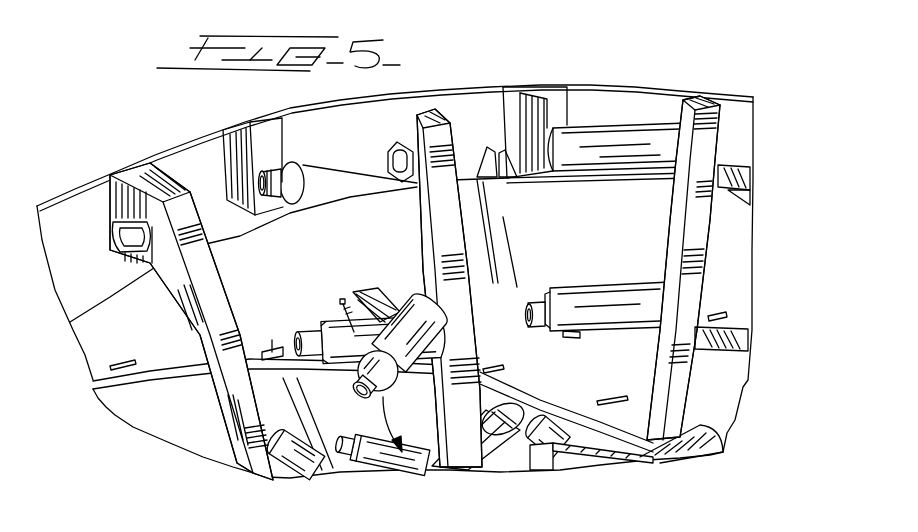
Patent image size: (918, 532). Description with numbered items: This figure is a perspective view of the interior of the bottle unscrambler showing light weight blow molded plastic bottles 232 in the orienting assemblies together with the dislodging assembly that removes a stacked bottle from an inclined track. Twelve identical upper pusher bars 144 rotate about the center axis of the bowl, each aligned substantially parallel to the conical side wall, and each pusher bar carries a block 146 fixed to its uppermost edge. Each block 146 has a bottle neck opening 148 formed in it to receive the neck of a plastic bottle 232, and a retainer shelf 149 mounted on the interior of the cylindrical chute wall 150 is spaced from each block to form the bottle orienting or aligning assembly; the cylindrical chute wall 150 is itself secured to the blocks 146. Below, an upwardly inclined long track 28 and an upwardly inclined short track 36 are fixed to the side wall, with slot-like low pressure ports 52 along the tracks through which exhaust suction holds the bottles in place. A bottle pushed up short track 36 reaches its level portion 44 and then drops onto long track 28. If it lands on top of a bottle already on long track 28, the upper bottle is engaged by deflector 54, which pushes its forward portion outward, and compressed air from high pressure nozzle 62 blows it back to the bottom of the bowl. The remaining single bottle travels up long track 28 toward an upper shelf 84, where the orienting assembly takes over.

The upwardly inclined long track 28 is at (537, 397).
The upwardly inclined short track 36 is at (720, 340).
The level portion 44 is at (577, 333).
The low pressure port 52 is at (273, 347).
The deflector 54 is at (373, 307).
The high pressure nozzle 62 is at (342, 299).
The upper shelf 84 is at (688, 178).
The upper pusher bar 144 is at (208, 297).
The block 146 is at (133, 173).
The bottle neck opening 148 is at (125, 232).
The retainer shelf 149 is at (258, 132).
The cylindrical chute wall 150 is at (462, 90).
The blow molded plastic bottle 232 is at (573, 167).